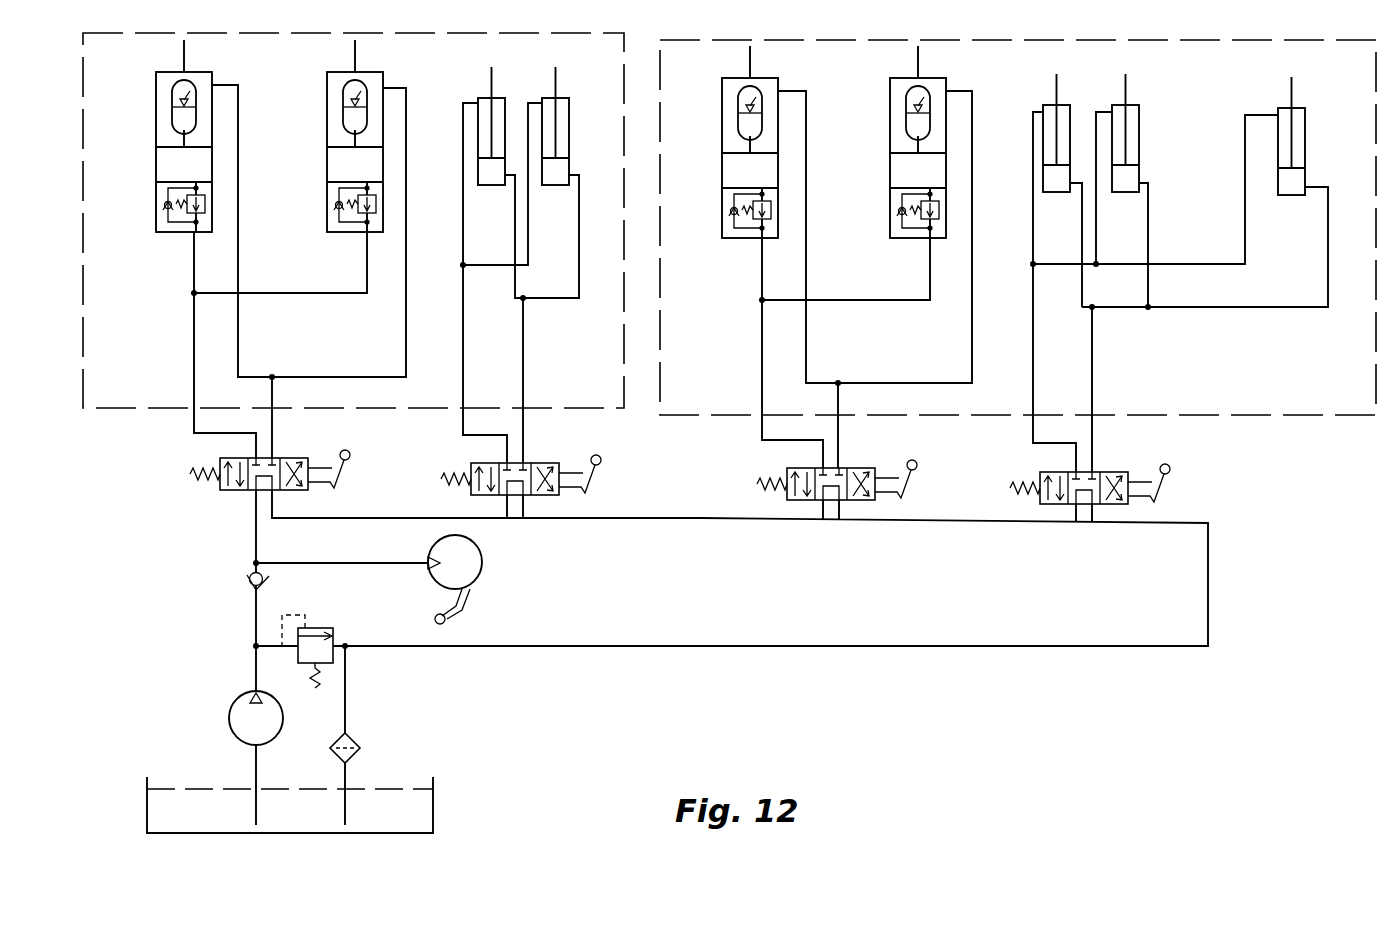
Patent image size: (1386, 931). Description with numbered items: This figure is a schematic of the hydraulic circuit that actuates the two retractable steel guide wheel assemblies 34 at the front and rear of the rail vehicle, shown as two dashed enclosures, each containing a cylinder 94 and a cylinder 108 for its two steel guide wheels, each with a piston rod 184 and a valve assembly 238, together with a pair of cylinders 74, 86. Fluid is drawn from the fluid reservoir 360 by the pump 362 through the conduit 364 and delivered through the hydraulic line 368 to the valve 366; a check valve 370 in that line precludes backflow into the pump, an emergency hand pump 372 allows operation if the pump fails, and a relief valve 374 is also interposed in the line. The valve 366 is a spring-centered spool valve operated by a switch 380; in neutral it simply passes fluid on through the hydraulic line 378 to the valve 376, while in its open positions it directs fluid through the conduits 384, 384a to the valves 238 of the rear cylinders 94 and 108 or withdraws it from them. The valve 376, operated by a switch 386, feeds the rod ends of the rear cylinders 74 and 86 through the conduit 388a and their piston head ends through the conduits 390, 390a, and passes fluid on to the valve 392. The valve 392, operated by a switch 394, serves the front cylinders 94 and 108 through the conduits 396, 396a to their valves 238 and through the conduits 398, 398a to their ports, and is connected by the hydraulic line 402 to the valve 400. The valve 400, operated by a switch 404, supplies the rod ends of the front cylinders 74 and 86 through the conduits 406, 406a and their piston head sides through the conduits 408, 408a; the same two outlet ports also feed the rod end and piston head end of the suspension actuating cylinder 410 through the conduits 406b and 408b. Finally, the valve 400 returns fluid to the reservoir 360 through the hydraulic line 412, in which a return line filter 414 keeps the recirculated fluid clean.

The guide wheel assembly 34 is at (553, 33).
The cylinder 74 is at (489, 106).
The cylinder 86 is at (569, 123).
The cylinder 94 is at (147, 134).
The cylinder 108 is at (320, 144).
The piston rod 184 is at (189, 97).
The valve assembly 238 is at (163, 216).
The fluid reservoir 360 is at (405, 826).
The pump 362 is at (232, 707).
The conduit 364 is at (253, 758).
The valve 366 is at (236, 490).
The hydraulic line 368 is at (255, 623).
The check valve 370 is at (248, 581).
The emergency hand pump 372 is at (458, 561).
The relief valve 374 is at (331, 640).
The valve 376 is at (557, 463).
The hydraulic line 378 is at (362, 518).
The switch 380 is at (349, 456).
The conduit 384 is at (194, 344).
The conduit 384a is at (322, 294).
The switch 386 is at (611, 474).
The conduit 388a is at (491, 266).
The conduit 390 is at (525, 383).
The conduit 390a is at (580, 283).
The valve 392 is at (858, 466).
The switch 394 is at (928, 462).
The conduit 396 is at (761, 345).
The conduit 396a is at (848, 301).
The conduit 398 is at (806, 377).
The conduit 398a is at (969, 354).
The valve 400 is at (1085, 466).
The hydraulic line 402 is at (1000, 525).
The switch 404 is at (1191, 475).
The conduit 406 is at (1033, 396).
The conduit 406a is at (1097, 232).
The conduit 406b is at (1185, 255).
The conduit 408 is at (1093, 371).
The conduit 408a is at (1150, 219).
The conduit 408b is at (1262, 308).
The actuating cylinder 410 is at (1298, 156).
The hydraulic line 412 is at (762, 656).
The return line filter 414 is at (362, 745).